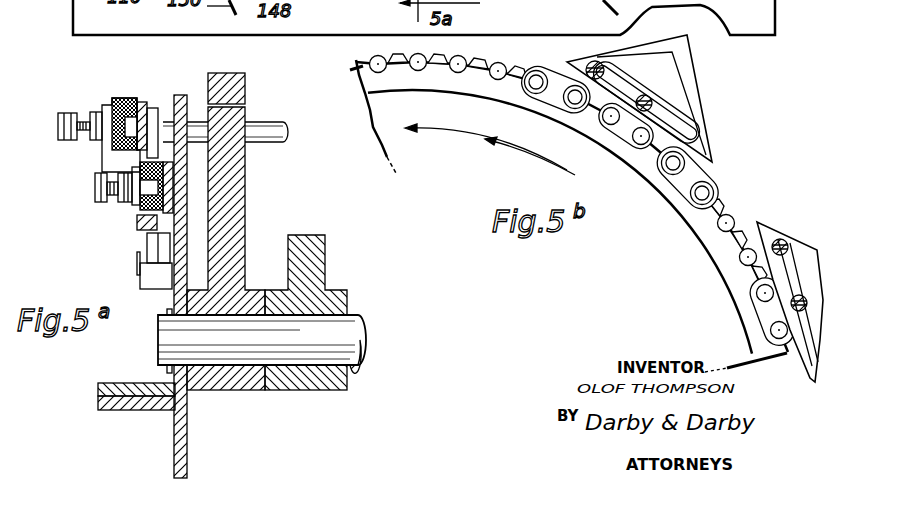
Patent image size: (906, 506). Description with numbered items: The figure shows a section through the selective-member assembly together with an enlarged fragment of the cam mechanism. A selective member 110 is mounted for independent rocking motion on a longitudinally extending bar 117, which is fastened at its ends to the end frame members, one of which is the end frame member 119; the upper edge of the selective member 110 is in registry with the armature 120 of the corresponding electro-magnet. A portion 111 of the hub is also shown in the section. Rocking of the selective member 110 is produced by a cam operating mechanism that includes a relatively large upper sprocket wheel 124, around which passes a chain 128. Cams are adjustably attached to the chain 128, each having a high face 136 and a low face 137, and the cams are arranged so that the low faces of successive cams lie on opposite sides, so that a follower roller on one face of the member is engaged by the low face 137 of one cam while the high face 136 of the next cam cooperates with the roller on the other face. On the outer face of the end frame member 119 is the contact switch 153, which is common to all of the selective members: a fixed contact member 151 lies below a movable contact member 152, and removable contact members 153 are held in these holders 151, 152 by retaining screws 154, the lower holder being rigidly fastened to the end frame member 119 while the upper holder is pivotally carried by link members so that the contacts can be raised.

In FIG. 5A, the selective member 110 is at (243, 207).
In FIG. 5A, the hub column 111 is at (313, 238).
In FIG. 5A, the longitudinally extending bar 117 is at (368, 332).
In FIG. 5A, the end frame member 119 is at (147, 101).
In FIG. 5A, the armature 120 is at (247, 90).
In FIG. 5B, the upper sprocket wheel 124 is at (477, 83).
In FIG. 5B, the chain 128 is at (697, 176).
In FIG. 5B, the high face 136 is at (667, 98).
In FIG. 5B, the low face 137 is at (692, 112).
In FIG. 5A, the fixed contact member 151 is at (170, 173).
In FIG. 5A, the movable contact member 152 is at (143, 101).
In FIG. 5A, the contact switch 153 is at (105, 152).
In FIG. 5A, the retaining screw 154 is at (95, 190).